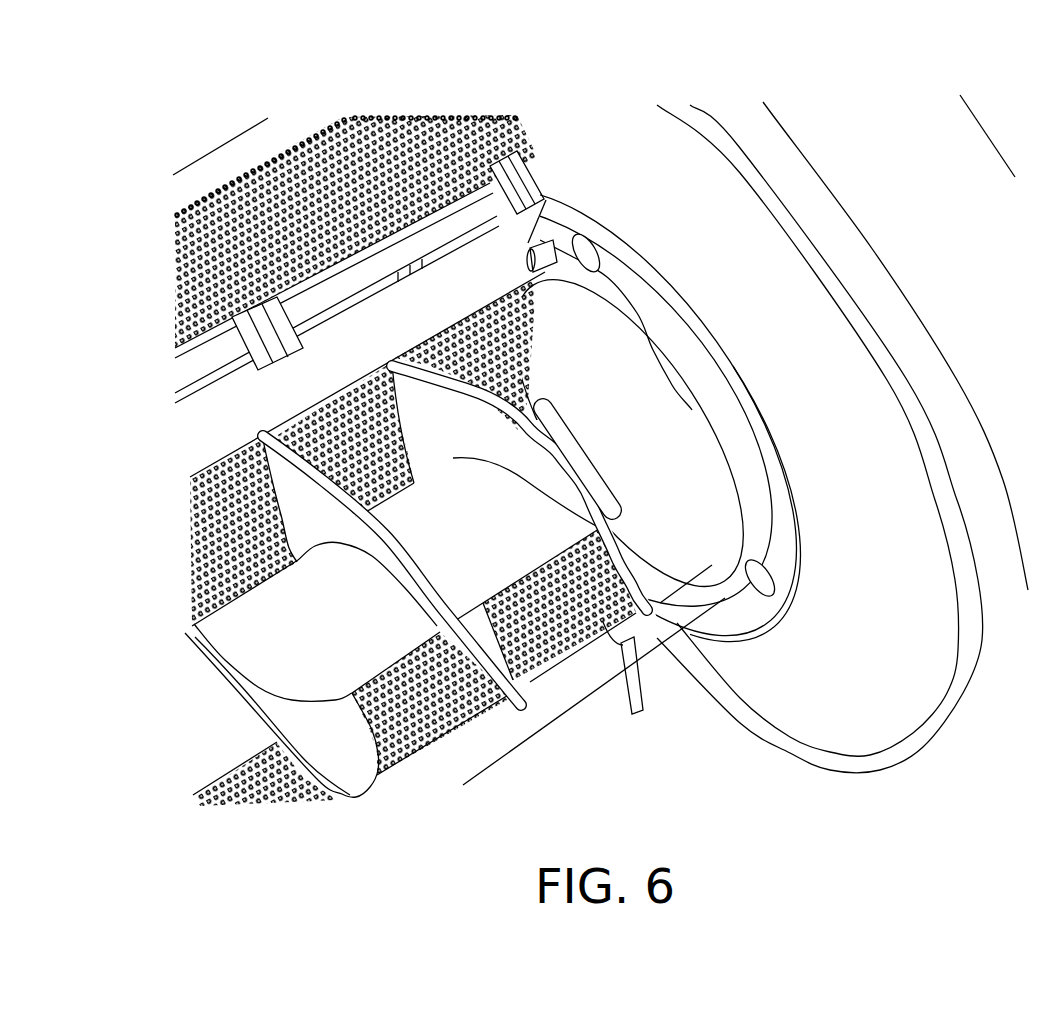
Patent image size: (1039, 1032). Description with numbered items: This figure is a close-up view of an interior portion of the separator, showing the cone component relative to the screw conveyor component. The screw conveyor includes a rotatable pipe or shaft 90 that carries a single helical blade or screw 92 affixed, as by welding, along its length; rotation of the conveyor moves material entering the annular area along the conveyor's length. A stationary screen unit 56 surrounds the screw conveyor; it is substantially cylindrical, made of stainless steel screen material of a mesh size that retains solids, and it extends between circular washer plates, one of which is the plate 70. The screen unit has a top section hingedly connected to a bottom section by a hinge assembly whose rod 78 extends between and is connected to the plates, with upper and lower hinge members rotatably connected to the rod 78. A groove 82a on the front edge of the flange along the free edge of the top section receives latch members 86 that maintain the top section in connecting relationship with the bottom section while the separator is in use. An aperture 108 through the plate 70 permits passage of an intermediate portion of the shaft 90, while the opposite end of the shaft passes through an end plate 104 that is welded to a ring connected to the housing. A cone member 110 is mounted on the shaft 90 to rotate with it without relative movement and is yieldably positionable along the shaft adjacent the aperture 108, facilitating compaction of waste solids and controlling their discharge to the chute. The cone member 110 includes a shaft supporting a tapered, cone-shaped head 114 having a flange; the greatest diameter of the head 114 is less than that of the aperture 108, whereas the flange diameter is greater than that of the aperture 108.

The screen unit 56 is at (518, 143).
The washer plate 70 is at (868, 498).
The rod 78 is at (352, 293).
The groove 82a is at (607, 625).
The latch member 86 is at (632, 695).
The shaft 90 is at (340, 624).
The helical blade 92 is at (513, 450).
The end plate 104 is at (972, 225).
The aperture 108 is at (603, 317).
The cone member 110 is at (660, 400).
The cone-shaped head 114 is at (681, 462).